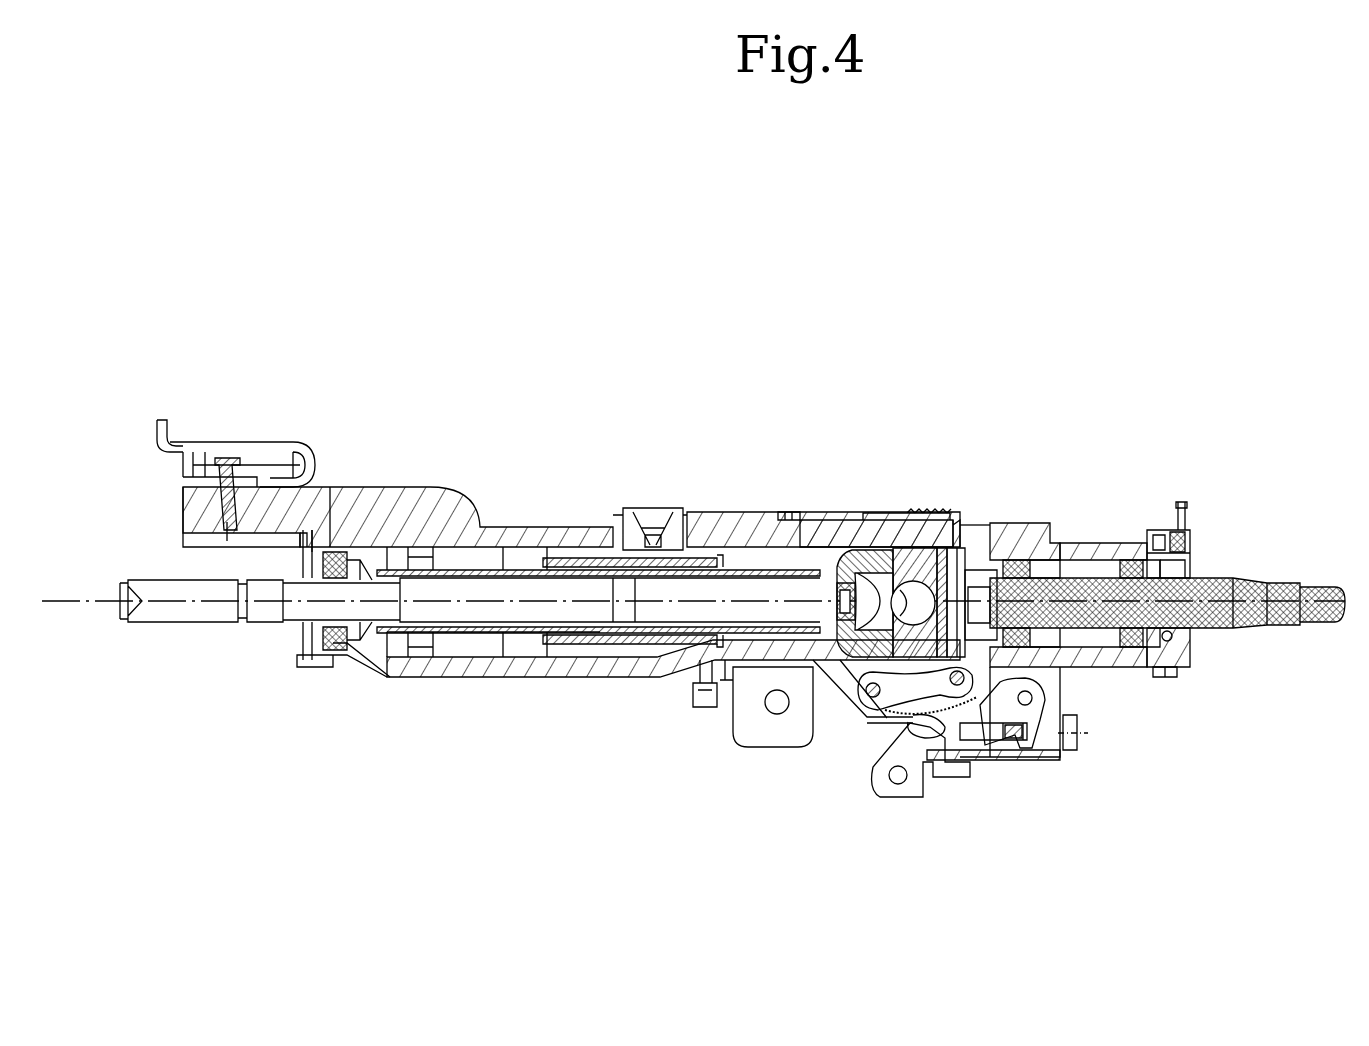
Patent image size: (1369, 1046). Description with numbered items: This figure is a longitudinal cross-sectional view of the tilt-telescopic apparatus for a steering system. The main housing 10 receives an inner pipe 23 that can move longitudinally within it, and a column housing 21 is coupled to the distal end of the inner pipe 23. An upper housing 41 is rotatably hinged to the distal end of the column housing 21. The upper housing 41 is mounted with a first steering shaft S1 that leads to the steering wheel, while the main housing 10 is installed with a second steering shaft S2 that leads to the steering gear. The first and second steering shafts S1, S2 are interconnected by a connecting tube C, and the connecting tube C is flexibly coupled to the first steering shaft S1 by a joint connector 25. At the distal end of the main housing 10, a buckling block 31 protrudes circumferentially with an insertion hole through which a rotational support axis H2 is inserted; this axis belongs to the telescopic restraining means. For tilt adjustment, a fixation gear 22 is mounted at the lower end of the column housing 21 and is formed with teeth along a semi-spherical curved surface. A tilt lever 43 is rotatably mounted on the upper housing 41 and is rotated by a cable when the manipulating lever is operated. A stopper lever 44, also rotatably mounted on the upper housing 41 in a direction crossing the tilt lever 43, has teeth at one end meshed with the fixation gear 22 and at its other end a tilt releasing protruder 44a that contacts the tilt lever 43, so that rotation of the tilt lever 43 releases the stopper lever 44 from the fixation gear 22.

The main housing 10 is at (440, 508).
The column housing 21 is at (848, 547).
The fixation gear 22 is at (920, 700).
The inner pipe 23 is at (750, 560).
The joint connector 25 is at (905, 575).
The buckling block 31 is at (712, 772).
The upper housing 41 is at (992, 548).
The tilt lever 43 is at (990, 733).
The stopper lever 44 is at (1028, 684).
The tilt releasing protruder 44a is at (1035, 750).
The connecting tube C is at (512, 640).
The rotational support axis H2 is at (780, 708).
The first steering shaft S1 is at (1283, 588).
The second steering shaft S2 is at (182, 582).